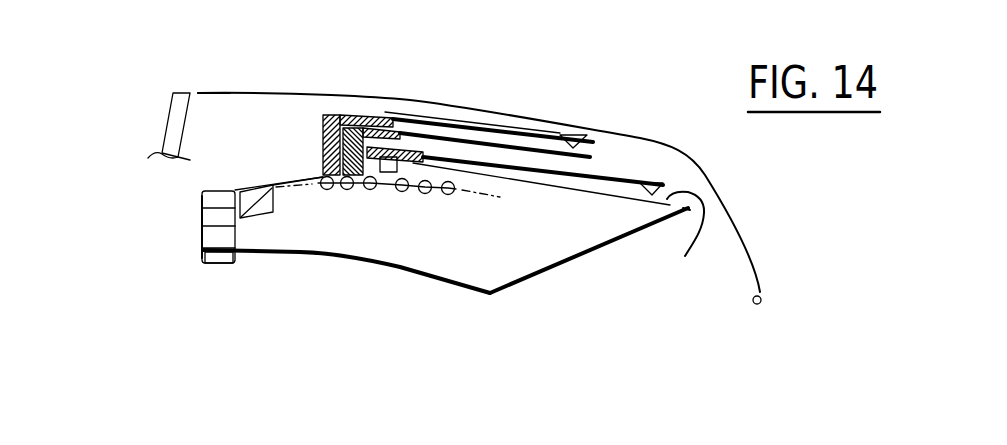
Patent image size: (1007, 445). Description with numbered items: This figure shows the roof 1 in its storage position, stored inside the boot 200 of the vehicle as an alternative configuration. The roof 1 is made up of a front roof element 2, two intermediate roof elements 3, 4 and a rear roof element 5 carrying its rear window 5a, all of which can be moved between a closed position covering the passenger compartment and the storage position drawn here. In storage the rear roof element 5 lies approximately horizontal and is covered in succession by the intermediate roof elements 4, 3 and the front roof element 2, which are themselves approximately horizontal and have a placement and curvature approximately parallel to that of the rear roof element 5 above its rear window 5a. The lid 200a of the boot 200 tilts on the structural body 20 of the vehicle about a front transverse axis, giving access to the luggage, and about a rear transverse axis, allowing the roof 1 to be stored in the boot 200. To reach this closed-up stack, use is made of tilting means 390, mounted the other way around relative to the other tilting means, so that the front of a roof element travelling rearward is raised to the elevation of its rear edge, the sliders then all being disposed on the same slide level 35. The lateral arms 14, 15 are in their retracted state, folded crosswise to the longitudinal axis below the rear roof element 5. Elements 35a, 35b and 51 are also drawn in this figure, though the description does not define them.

The roof 1 is at (569, 251).
The front roof element 2 is at (413, 100).
The intermediate roof element 3 is at (556, 127).
The intermediate roof element 4 is at (598, 153).
The rear roof element 5 is at (353, 247).
The rear window 5a is at (685, 248).
The lateral arm 14 is at (203, 219).
The lateral arm 15 is at (203, 251).
The structural body 20 is at (155, 126).
The slide level 35 is at (212, 198).
The clip arm 35a is at (285, 185).
The clip base 35b is at (207, 208).
The tread edge 51 is at (211, 102).
The boot 200 is at (500, 329).
The lid 200a is at (513, 108).
The tilting means 390 is at (258, 224).